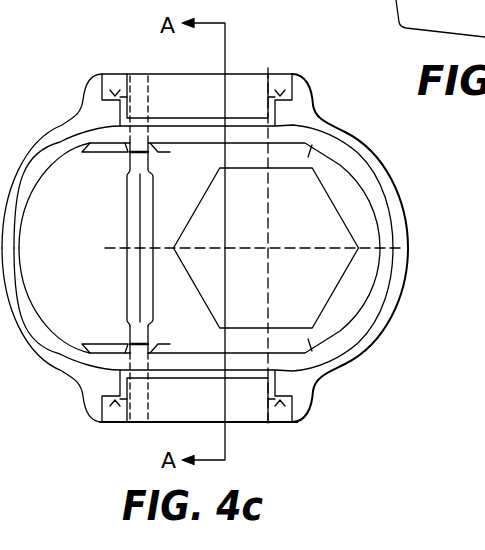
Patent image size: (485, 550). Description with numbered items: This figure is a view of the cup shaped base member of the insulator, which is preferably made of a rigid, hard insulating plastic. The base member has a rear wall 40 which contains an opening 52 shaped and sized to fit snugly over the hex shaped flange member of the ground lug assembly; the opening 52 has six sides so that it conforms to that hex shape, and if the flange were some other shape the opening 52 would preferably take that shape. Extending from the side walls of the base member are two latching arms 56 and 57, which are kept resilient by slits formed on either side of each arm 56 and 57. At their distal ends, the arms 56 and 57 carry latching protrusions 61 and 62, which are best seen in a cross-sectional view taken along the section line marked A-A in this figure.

The rear wall 40 is at (353, 292).
The opening 52 is at (300, 210).
The latching arm 56 is at (145, 423).
The latching arm 57 is at (240, 72).
The latching protrusion 61 is at (129, 73).
The latching protrusion 62 is at (145, 398).